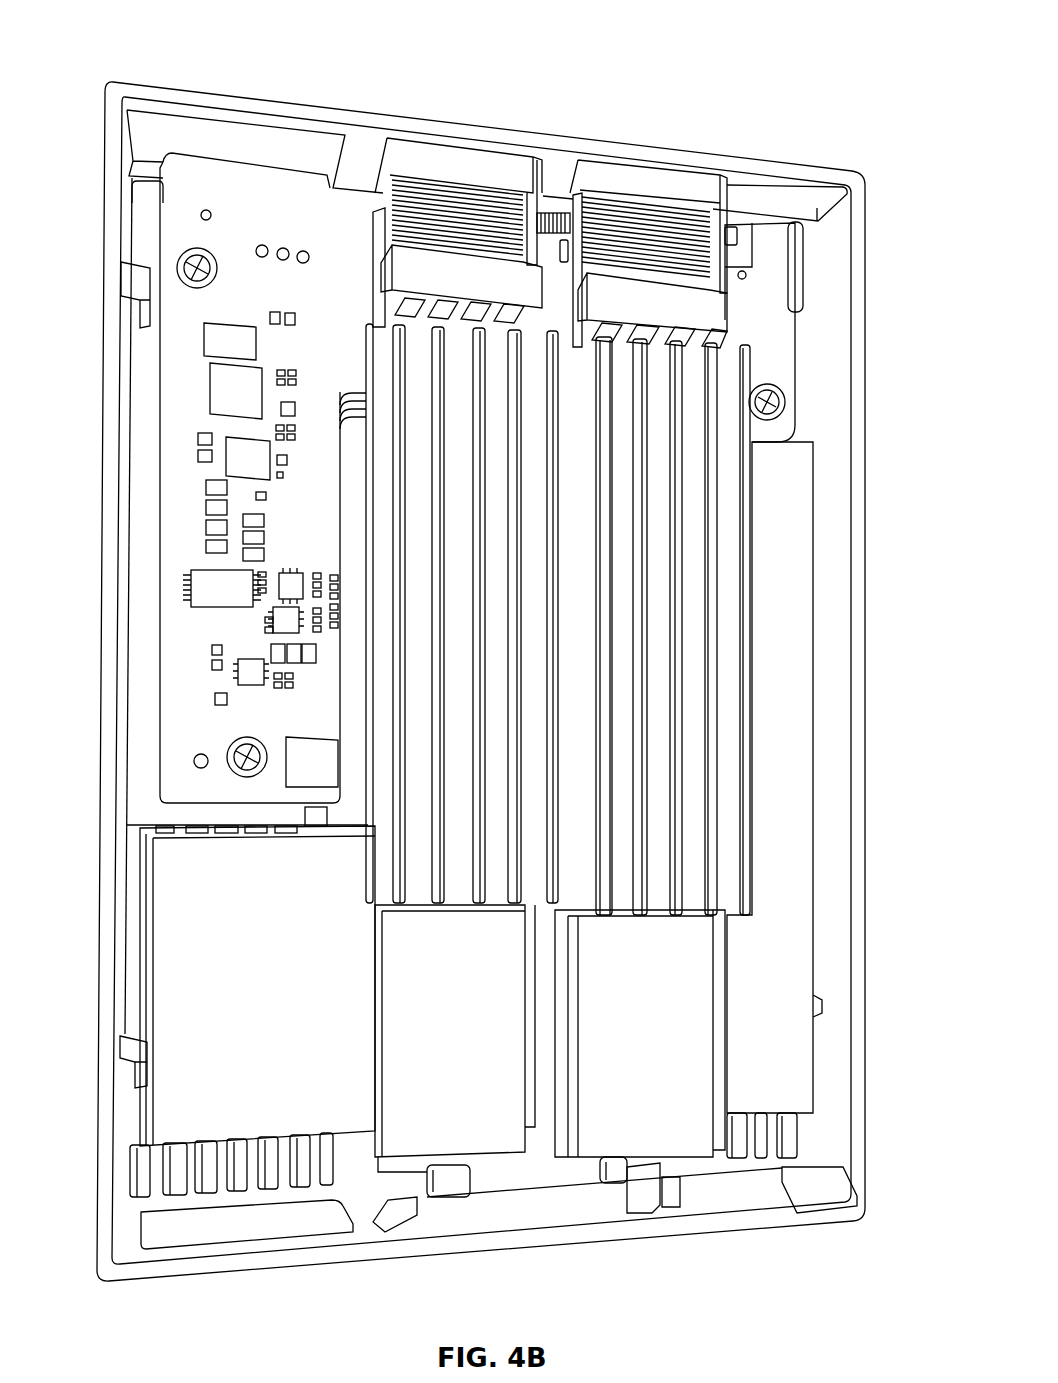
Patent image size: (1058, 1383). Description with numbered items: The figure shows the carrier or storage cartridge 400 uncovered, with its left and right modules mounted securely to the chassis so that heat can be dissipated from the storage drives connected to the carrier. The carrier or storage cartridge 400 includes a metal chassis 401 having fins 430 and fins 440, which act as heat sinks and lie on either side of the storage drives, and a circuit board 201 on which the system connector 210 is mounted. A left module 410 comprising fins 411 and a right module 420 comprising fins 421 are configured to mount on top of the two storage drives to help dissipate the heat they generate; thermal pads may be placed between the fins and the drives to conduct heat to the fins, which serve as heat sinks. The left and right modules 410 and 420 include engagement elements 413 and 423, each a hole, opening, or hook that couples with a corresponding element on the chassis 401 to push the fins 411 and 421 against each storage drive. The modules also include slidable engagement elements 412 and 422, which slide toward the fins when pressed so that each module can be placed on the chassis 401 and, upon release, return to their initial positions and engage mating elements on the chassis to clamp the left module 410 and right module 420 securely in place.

The carrier or storage cartridge 400 is at (136, 26).
The metal chassis 401 is at (860, 212).
The circuit board 201 is at (175, 425).
The system connector 210 is at (557, 215).
The left module 410 is at (177, 972).
The fins 411 is at (438, 598).
The slidable engagement element 412 is at (460, 278).
The engagement element 413 is at (430, 1195).
The right module 420 is at (833, 972).
The fins 421 is at (675, 640).
The slidable engagement element 422 is at (652, 295).
The engagement element 423 is at (628, 1170).
The fins 430 is at (175, 1175).
The fins 440 is at (800, 1133).